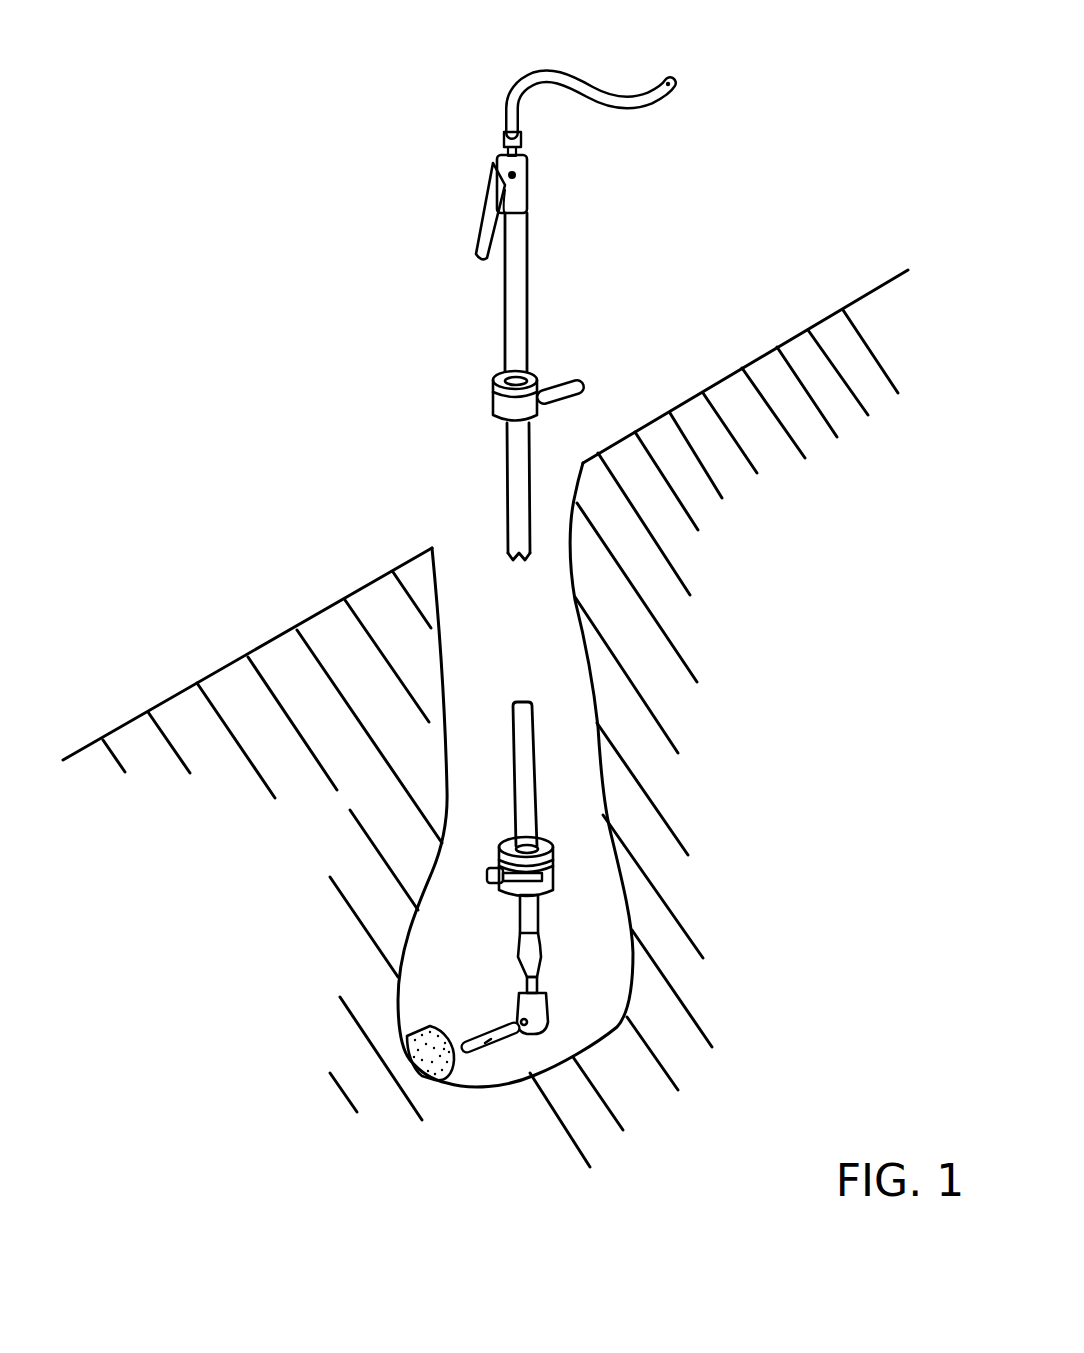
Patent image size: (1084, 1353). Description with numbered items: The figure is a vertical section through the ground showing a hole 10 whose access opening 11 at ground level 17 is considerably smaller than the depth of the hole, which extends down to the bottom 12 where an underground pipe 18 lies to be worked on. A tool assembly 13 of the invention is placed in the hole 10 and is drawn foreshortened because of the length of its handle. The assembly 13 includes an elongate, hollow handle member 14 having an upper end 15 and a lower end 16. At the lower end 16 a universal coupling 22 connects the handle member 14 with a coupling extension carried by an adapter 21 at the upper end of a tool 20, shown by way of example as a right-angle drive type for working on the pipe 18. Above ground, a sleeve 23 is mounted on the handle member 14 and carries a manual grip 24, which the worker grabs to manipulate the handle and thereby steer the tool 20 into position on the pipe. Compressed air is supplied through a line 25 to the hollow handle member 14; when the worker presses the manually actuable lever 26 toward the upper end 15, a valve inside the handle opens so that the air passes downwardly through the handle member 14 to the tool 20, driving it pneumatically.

The hole 10 is at (550, 678).
The access opening 11 is at (566, 496).
The bottom of the hole 12 is at (600, 1013).
The tool assembly 13 is at (518, 346).
The handle member 14 is at (507, 302).
The upper end 15 is at (517, 242).
The lower end 16 is at (527, 825).
The ground level 17 is at (753, 357).
The pipe 18 is at (426, 1057).
The tool 20 is at (497, 1043).
The adapter 21 is at (542, 865).
The universal coupling 22 is at (553, 866).
The sleeve 23 is at (497, 402).
The manual grip 24 is at (560, 381).
The line 25 is at (563, 77).
The manually actuable lever 26 is at (481, 220).